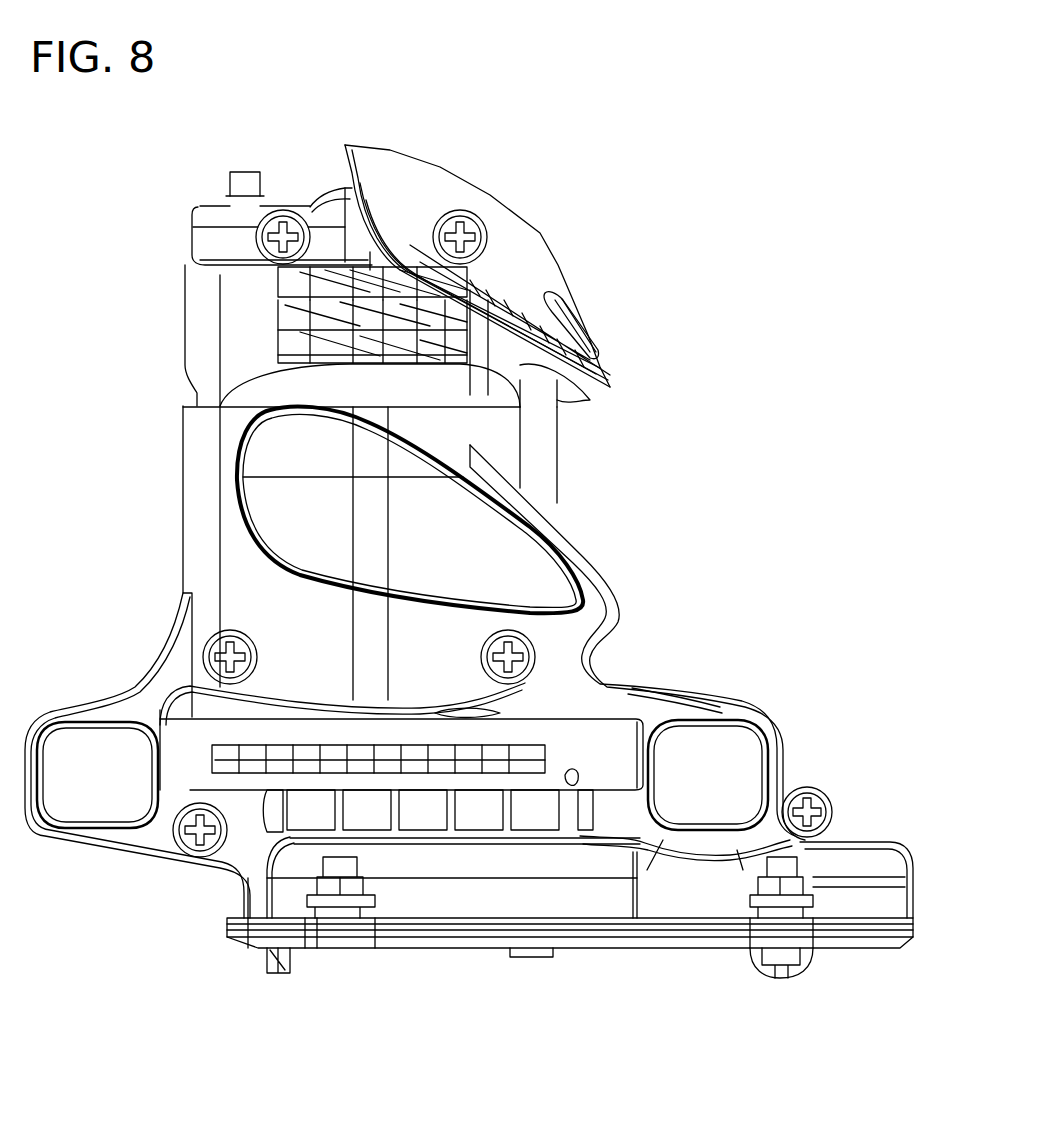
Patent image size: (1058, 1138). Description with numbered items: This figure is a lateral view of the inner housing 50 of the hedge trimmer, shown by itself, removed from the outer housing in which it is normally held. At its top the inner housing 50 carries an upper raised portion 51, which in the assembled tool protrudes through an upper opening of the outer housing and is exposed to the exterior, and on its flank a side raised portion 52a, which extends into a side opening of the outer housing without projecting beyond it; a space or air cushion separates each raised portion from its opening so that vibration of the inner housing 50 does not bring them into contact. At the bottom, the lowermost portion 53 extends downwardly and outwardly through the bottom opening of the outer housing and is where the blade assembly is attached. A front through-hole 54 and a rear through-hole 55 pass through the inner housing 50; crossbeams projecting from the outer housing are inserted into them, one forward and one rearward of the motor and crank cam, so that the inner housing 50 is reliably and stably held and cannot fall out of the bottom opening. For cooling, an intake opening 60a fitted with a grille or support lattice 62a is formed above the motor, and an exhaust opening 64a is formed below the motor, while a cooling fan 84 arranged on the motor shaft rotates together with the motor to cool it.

The inner housing 50 is at (183, 485).
The upper raised portion 51 is at (512, 215).
The side raised portion 52a is at (527, 553).
The lowermost portion 53 is at (227, 947).
The front through-hole 54 is at (758, 750).
The rear through-hole 55 is at (100, 812).
The intake opening 60a is at (280, 315).
The grille or support lattice 62a is at (280, 357).
The exhaust opening 64a is at (207, 767).
The cooling fan 84 is at (250, 775).